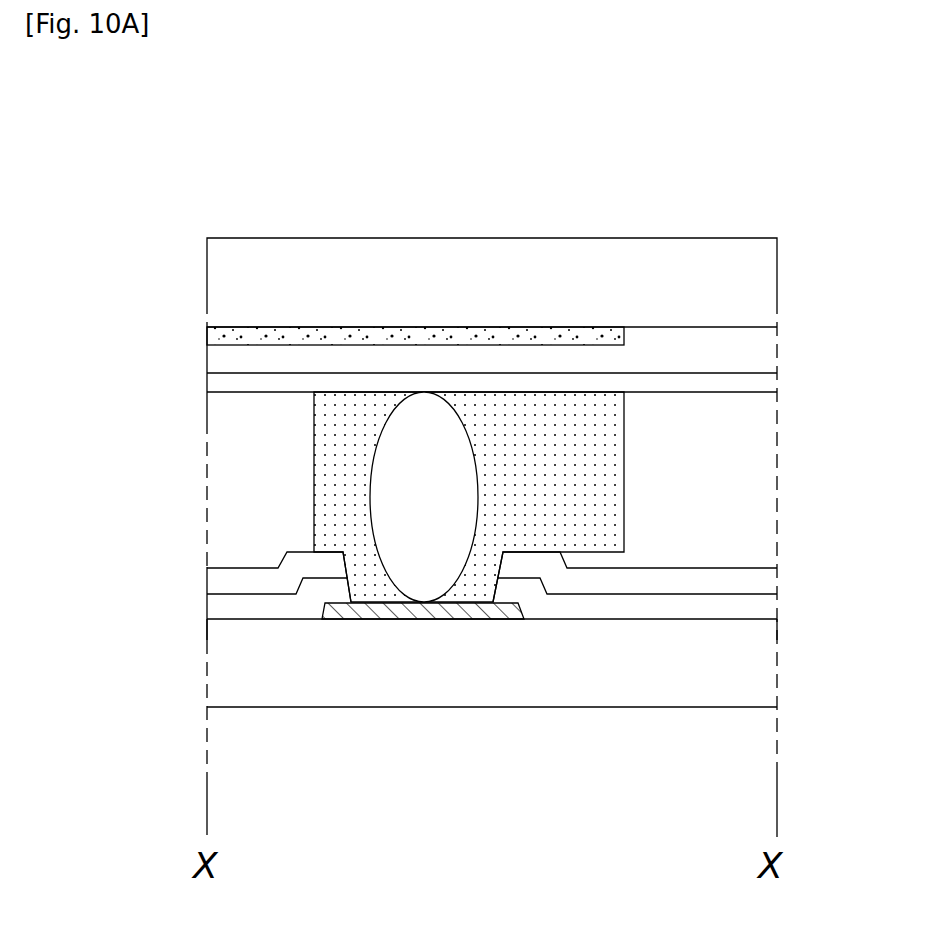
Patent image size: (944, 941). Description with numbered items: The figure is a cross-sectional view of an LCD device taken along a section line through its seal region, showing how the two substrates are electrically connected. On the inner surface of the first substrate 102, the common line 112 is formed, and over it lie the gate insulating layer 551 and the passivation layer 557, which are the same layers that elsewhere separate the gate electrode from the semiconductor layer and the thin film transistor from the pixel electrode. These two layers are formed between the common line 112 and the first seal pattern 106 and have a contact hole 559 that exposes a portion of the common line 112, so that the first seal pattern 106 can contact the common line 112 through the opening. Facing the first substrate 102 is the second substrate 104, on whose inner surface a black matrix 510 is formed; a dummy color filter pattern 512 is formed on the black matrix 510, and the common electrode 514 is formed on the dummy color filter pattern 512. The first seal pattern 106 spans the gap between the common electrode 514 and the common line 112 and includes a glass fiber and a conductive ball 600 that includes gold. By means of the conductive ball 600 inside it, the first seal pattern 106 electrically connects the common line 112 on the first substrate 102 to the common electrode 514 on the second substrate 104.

The second substrate 104 is at (748, 309).
The black matrix 510 is at (388, 337).
The dummy color filter pattern 512 is at (242, 358).
The common electrode 514 is at (247, 383).
The first seal pattern 106 is at (593, 480).
The conductive ball 600 is at (413, 568).
The passivation layer 557 is at (667, 580).
The gate insulating layer 551 is at (575, 607).
The common line 112 is at (452, 610).
The contact hole 559 is at (475, 592).
The first substrate 102 is at (760, 685).